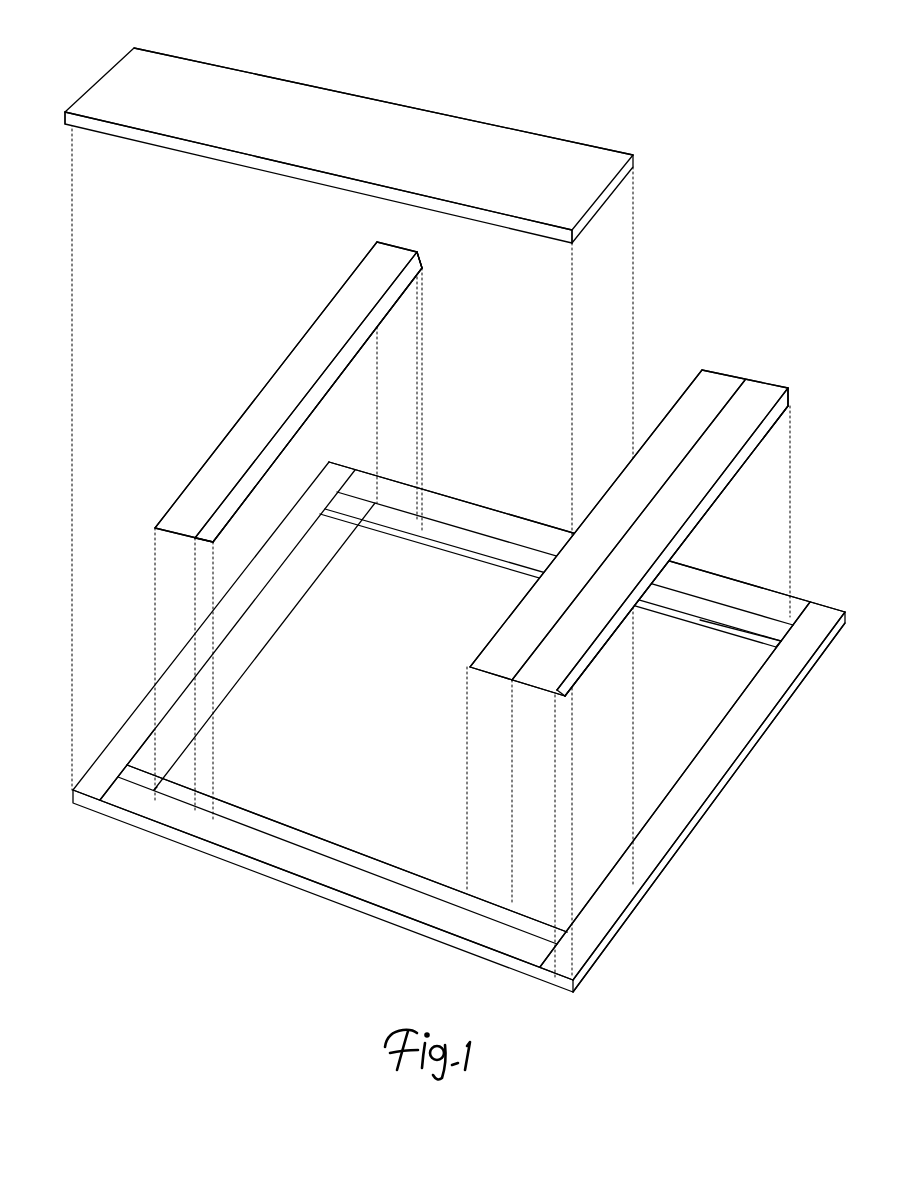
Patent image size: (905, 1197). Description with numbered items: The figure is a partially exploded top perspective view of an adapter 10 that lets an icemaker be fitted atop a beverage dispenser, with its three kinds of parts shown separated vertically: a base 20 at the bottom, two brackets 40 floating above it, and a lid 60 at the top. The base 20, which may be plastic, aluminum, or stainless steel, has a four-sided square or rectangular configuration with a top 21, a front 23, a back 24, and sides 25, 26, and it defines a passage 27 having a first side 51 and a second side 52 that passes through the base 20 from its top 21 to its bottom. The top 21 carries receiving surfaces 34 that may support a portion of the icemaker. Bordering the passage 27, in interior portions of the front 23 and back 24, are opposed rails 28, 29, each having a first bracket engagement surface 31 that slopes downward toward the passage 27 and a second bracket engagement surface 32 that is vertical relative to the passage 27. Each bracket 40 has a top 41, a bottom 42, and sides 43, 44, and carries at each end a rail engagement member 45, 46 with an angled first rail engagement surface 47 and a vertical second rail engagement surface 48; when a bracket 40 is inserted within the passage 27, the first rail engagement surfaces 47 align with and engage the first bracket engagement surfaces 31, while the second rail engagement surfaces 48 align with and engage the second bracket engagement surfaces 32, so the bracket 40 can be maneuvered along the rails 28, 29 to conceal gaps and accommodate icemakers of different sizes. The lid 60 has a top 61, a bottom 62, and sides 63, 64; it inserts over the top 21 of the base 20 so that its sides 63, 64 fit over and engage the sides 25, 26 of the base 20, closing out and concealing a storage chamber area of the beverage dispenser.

The adapter 10 is at (444, 511).
The base 20 is at (459, 719).
The top 21 is at (705, 768).
The front 23 is at (250, 870).
The back 24 is at (447, 492).
The side 25 is at (143, 690).
The side 26 is at (703, 822).
The passage 27 is at (371, 742).
The rail 28 is at (458, 546).
The rail 29 is at (233, 807).
The first bracket engagement surface 31 is at (330, 840).
The second bracket engagement surface 32 is at (700, 620).
The receiving surfaces 34 is at (468, 500).
The bracket 40 is at (468, 542).
The top 41 is at (225, 453).
The bottom 42 is at (292, 438).
The side 43 is at (308, 328).
The side 44 is at (333, 372).
The rail engagement member 45 is at (160, 535).
The rail engagement member 46 is at (402, 246).
The first rail engagement surface 47 is at (422, 258).
The second rail engagement surface 48 is at (424, 274).
The first side 51 is at (150, 727).
The second side 52 is at (772, 652).
The lid 60 is at (338, 160).
The top 61 is at (285, 90).
The bottom 62 is at (231, 158).
The side 63 is at (67, 122).
The side 64 is at (590, 226).